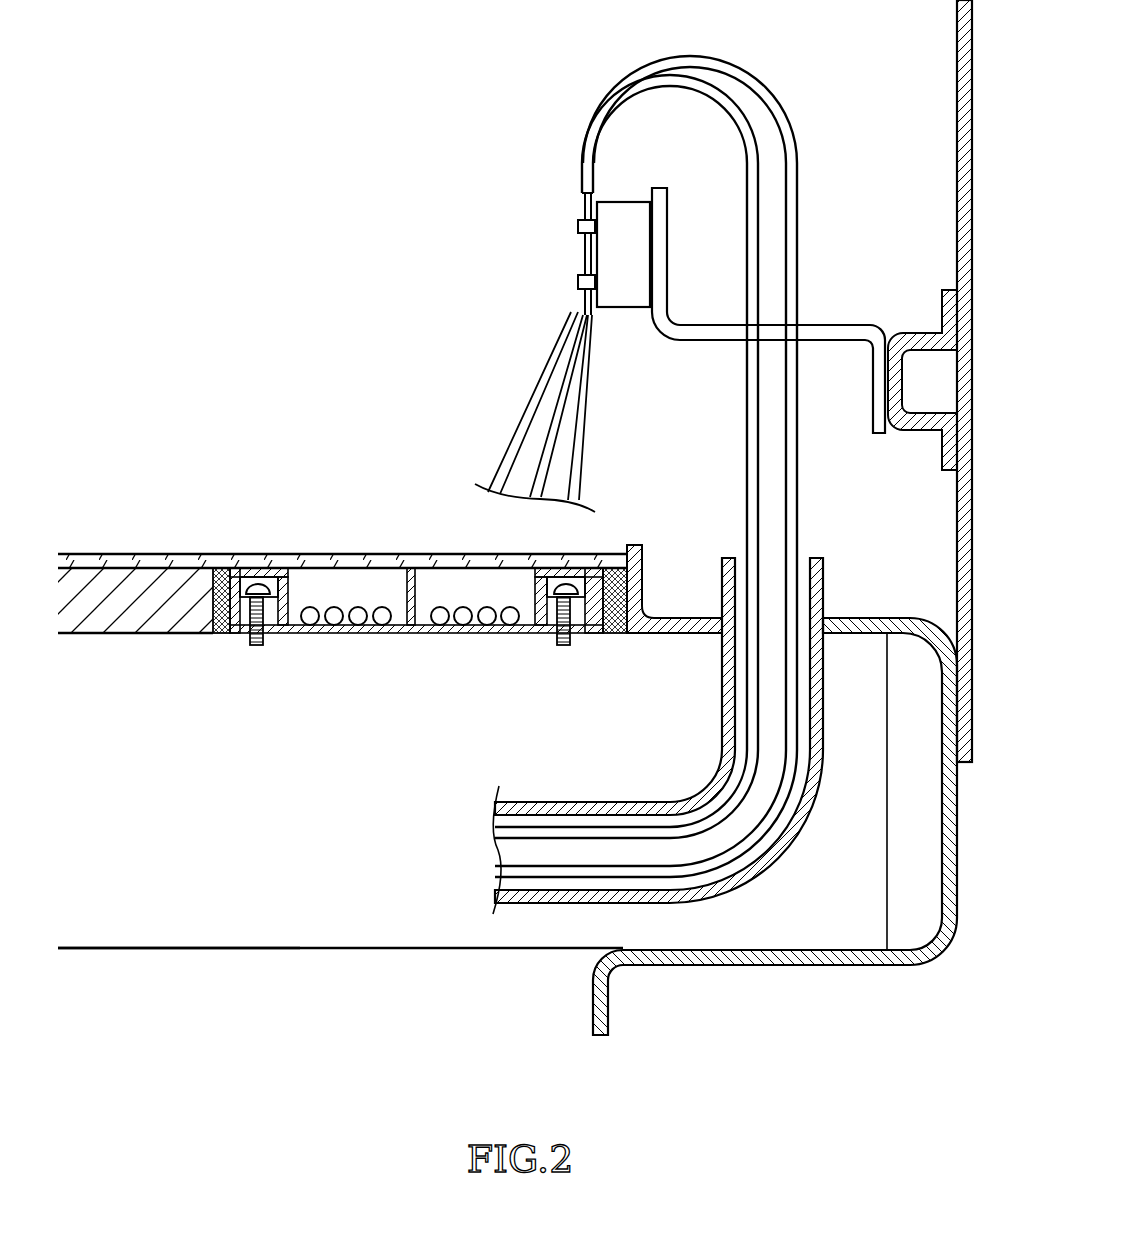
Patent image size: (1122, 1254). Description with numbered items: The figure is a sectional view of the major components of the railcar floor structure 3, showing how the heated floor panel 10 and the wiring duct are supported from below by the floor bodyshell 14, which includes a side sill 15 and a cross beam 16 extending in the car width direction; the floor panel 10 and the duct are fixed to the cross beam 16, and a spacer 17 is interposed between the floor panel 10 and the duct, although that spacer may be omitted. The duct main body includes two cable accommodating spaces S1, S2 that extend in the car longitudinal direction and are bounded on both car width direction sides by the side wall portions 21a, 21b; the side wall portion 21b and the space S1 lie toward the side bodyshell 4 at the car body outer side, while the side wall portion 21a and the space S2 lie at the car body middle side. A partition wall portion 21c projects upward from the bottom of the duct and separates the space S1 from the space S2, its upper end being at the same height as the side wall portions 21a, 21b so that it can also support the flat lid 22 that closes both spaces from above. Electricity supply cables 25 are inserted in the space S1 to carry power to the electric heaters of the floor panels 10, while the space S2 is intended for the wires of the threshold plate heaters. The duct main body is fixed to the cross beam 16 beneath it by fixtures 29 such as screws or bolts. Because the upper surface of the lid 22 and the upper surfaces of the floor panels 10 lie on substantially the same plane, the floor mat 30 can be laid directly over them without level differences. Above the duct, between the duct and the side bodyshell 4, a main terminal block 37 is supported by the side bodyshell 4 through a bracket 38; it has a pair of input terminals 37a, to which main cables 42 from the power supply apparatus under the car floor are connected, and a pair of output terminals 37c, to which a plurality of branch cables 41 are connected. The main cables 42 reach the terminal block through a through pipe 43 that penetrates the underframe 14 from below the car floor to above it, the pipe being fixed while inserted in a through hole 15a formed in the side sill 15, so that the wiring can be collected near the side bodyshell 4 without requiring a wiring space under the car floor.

The floor structure 3 is at (343, 514).
The side bodyshell 4 is at (957, 42).
The floor panel 10 is at (108, 633).
The floor bodyshell 14 is at (305, 950).
The side sill 15 is at (785, 966).
The through hole 15a is at (820, 617).
The cross beam 16 is at (200, 950).
The spacer 17 is at (221, 633).
The side wall portion 21a is at (258, 646).
The side wall portion 21b is at (565, 646).
The partition wall portion 21c is at (410, 633).
The lid 22 is at (435, 575).
The electricity supply cable 25 is at (355, 605).
The fixture 29 is at (565, 573).
The floor mat 30 is at (250, 553).
The main terminal block 37 is at (623, 307).
The input terminal 37a is at (578, 227).
The output terminal 37c is at (578, 283).
The bracket 38 is at (705, 341).
The branch cable 41 is at (528, 405).
The main cable 42 is at (802, 208).
The through pipe 43 is at (640, 803).
The cable accommodating space S1 is at (340, 630).
The cable accommodating space S2 is at (452, 633).